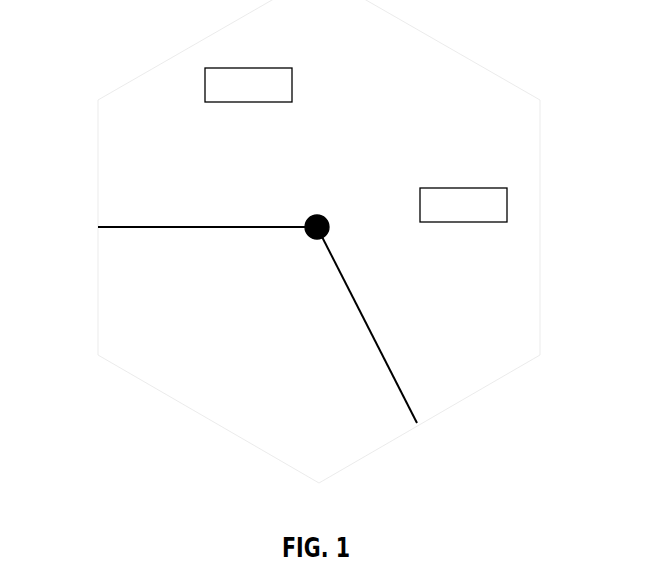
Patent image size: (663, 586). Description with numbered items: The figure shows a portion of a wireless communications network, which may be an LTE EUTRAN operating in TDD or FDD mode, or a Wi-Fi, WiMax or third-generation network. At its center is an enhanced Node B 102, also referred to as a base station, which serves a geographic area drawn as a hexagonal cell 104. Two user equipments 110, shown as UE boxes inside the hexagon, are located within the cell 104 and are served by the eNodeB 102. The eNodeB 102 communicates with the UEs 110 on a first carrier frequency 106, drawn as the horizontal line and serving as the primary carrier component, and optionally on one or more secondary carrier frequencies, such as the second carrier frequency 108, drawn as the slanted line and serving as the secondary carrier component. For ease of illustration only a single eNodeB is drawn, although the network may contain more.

The enhanced Node B 102 is at (317, 213).
The cell 104 is at (435, 42).
The first carrier frequency 106 is at (223, 228).
The second carrier frequency 108 is at (358, 317).
The user equipment 110 is at (248, 68).